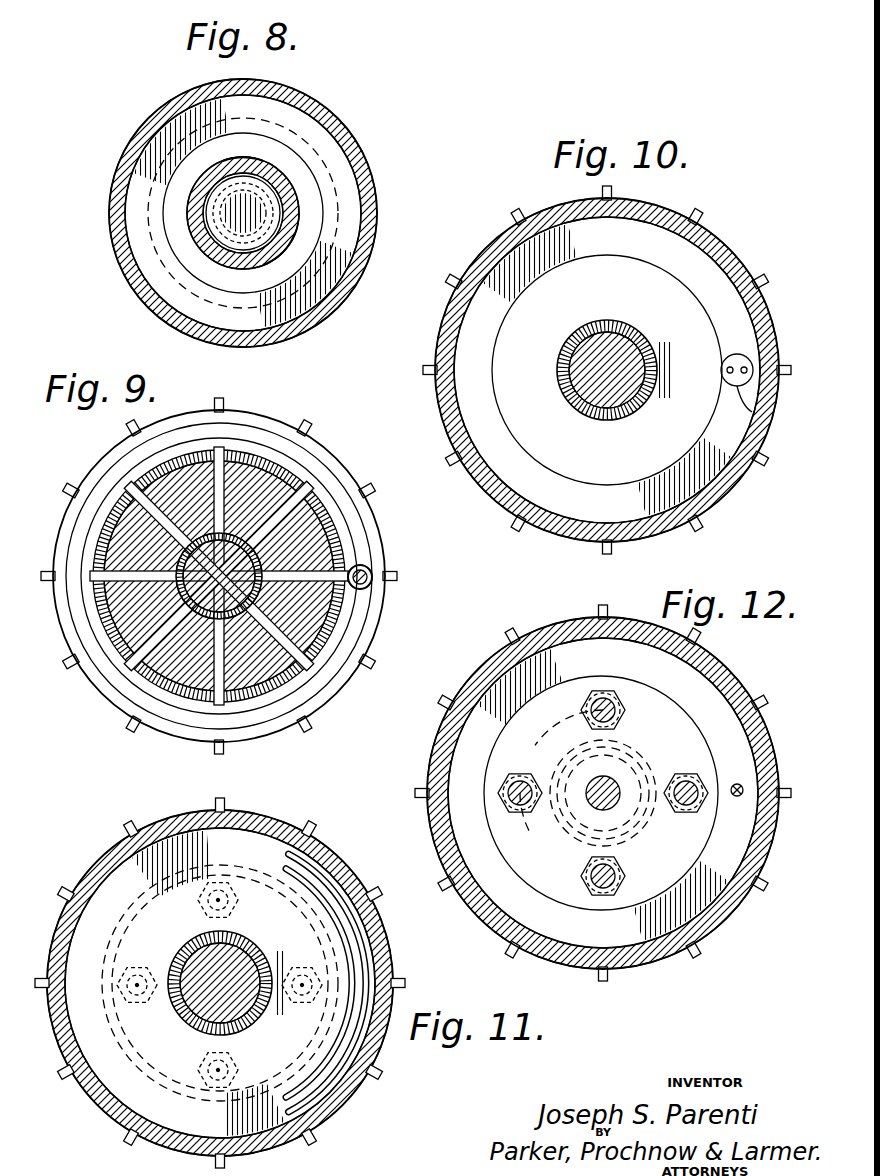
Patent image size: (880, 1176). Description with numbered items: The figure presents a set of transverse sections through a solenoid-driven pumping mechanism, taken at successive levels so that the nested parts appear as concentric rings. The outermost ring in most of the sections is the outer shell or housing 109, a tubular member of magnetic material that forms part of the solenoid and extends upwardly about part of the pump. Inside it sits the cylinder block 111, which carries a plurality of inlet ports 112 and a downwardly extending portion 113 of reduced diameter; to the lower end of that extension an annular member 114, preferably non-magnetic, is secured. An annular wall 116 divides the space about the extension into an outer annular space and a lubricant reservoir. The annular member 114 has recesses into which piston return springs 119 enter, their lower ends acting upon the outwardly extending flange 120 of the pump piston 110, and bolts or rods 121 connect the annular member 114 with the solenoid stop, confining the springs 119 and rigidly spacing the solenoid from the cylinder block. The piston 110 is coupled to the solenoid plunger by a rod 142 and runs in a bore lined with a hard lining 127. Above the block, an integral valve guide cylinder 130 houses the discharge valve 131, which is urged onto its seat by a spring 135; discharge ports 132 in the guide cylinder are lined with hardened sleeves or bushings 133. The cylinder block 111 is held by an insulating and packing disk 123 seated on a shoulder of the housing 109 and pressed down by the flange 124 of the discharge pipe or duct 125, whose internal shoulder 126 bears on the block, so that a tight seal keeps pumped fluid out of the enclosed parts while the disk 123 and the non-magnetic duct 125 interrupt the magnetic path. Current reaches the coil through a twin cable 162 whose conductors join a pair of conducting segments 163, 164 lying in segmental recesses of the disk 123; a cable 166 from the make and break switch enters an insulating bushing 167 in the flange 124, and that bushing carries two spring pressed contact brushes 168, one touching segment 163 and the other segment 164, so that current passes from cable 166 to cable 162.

In FIG. 10, the outer shell or housing 109 is at (607, 363).
In FIG. 12, the outer shell or housing 109 is at (603, 788).
In FIG. 11, the outer shell or housing 109 is at (220, 983).
In FIG. 10, the pump piston 110 is at (603, 379).
In FIG. 9, the pump piston 110 is at (301, 591).
In FIG. 12, the pump piston 110 is at (615, 810).
In FIG. 11, the pump piston 110 is at (211, 998).
In FIG. 10, the cylinder block 111 is at (603, 370).
In FIG. 9, the cylinder block 111 is at (185, 576).
In FIG. 9, the inlet ports 112 is at (219, 549).
In FIG. 10, the downwardly extending portion 113 is at (607, 351).
In FIG. 12, the downwardly extending portion 113 is at (582, 799).
In FIG. 11, the downwardly extending portion 113 is at (223, 974).
In FIG. 12, the annular member 114 is at (621, 795).
In FIG. 11, the annular wall 116 is at (220, 990).
In FIG. 12, the piston return springs 119 is at (561, 772).
In FIG. 12, the outwardly extending flange 120 is at (601, 781).
In FIG. 10, the bolts or rods 121 is at (608, 357).
In FIG. 12, the bolts or rods 121 is at (603, 813).
In FIG. 11, the bolts or rods 121 is at (219, 985).
In FIG. 11, the insulating and packing disk 123 is at (220, 971).
In FIG. 10, the flange 124 is at (638, 370).
In FIG. 9, the flange 124 is at (219, 576).
In FIG. 8, the discharge pipe or duct 125 is at (202, 213).
In FIG. 8, the internal shoulder 126 is at (232, 213).
In FIG. 9, the lining 127 is at (144, 567).
In FIG. 8, the valve guide cylinder 130 is at (183, 220).
In FIG. 8, the discharge valve 131 is at (243, 191).
In FIG. 8, the discharge ports 132 is at (350, 241).
In FIG. 8, the sleeves or bushings 133 is at (321, 211).
In FIG. 8, the spring 135 is at (243, 213).
In FIG. 9, the spring 135 is at (219, 605).
In FIG. 12, the rod 142 is at (634, 809).
In FIG. 12, the twin cable 162 is at (768, 764).
In FIG. 11, the conducting segment 163 is at (328, 971).
In FIG. 11, the conducting segment 164 is at (342, 977).
In FIG. 9, the cable 166 is at (391, 562).
In FIG. 10, the insulating bushing 167 is at (765, 400).
In FIG. 9, the insulating bushing 167 is at (387, 591).
In FIG. 10, the spring pressed contact brushes 168 is at (757, 348).